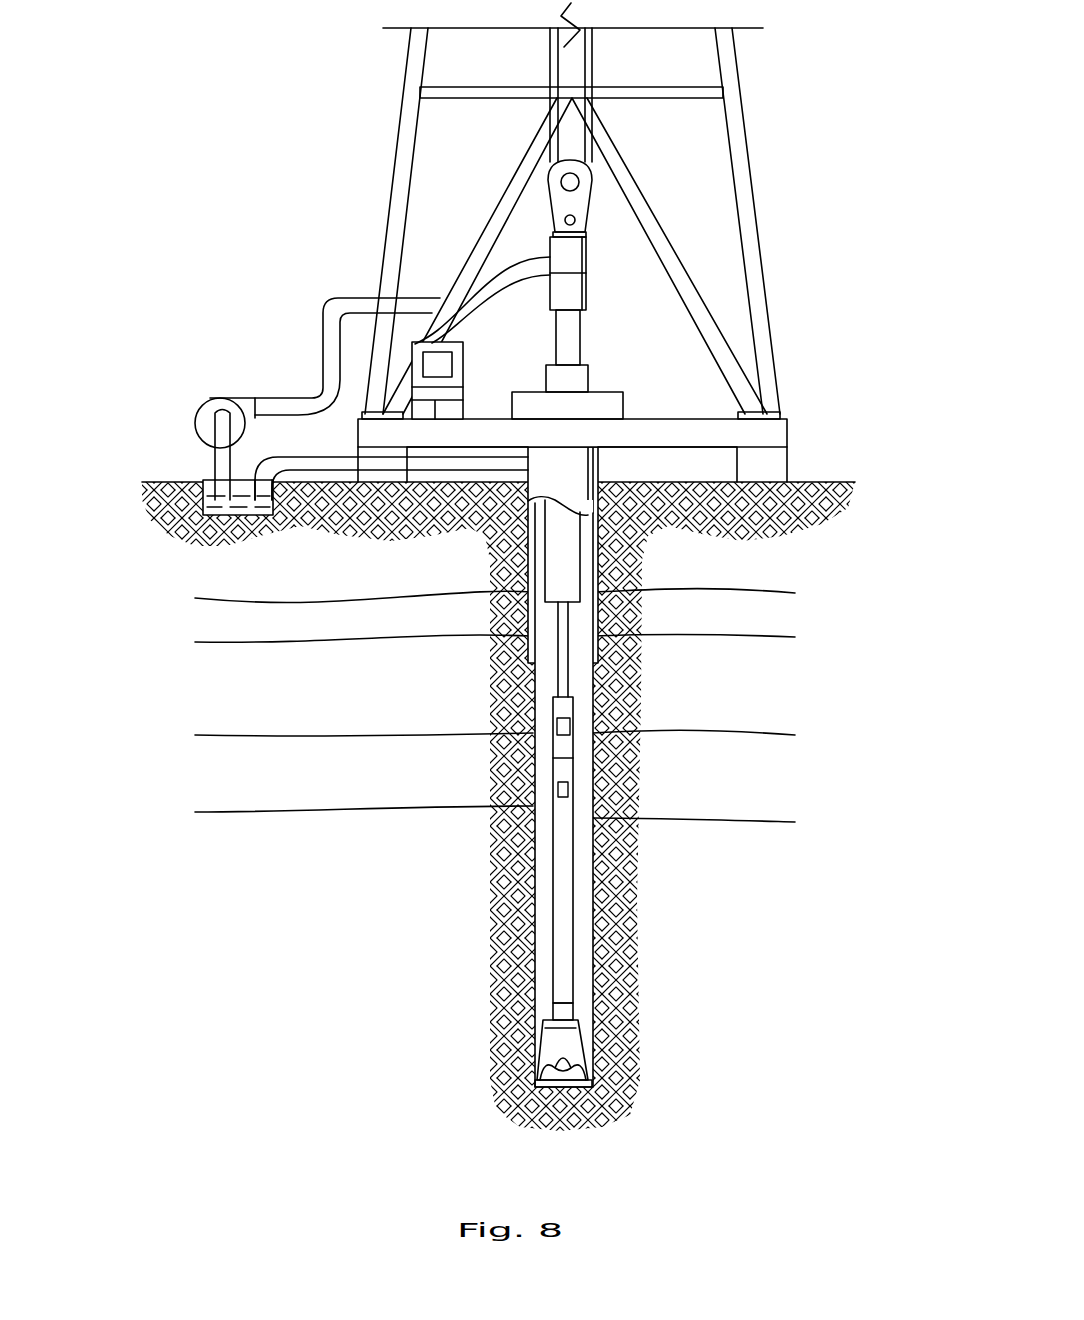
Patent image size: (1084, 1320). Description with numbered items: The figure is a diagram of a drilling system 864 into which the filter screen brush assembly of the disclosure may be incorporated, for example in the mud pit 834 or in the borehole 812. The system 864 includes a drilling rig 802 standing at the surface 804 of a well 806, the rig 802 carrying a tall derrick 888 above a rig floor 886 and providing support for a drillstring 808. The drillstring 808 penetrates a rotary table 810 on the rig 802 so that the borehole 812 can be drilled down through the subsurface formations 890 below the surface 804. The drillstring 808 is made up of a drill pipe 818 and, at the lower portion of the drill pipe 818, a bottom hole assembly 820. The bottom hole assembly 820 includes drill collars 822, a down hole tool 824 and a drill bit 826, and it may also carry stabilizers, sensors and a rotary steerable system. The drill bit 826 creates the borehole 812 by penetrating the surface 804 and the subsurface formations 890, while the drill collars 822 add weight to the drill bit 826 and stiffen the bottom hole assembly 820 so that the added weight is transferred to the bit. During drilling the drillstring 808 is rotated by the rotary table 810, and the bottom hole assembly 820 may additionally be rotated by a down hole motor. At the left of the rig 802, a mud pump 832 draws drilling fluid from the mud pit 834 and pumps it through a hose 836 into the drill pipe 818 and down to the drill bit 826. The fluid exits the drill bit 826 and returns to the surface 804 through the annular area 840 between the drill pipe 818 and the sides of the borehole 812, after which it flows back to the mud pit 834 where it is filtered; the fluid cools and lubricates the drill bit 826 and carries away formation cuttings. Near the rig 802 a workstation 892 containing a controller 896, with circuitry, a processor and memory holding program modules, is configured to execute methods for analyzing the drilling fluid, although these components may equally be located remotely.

The drilling rig 802 is at (761, 208).
The surface 804 is at (808, 481).
The well 806 is at (612, 476).
The drillstring 808 is at (646, 879).
The rotary table 810 is at (527, 392).
The borehole 812 is at (593, 952).
The drill pipe 818 is at (563, 637).
The bottom hole assembly 820 is at (488, 658).
The drill collars 822 is at (580, 560).
The down hole tool 824 is at (562, 982).
The drill bit 826 is at (570, 1043).
The mud pump 832 is at (226, 398).
The mud pit 834 is at (227, 510).
The hose 836 is at (336, 297).
The annular area 840 is at (583, 700).
The drilling system 864 is at (278, 118).
The rig floor 886 is at (787, 420).
The derrick 888 is at (742, 113).
The subsurface formations 890 is at (168, 600).
The workstation 892 is at (452, 336).
The controller 896 is at (452, 365).